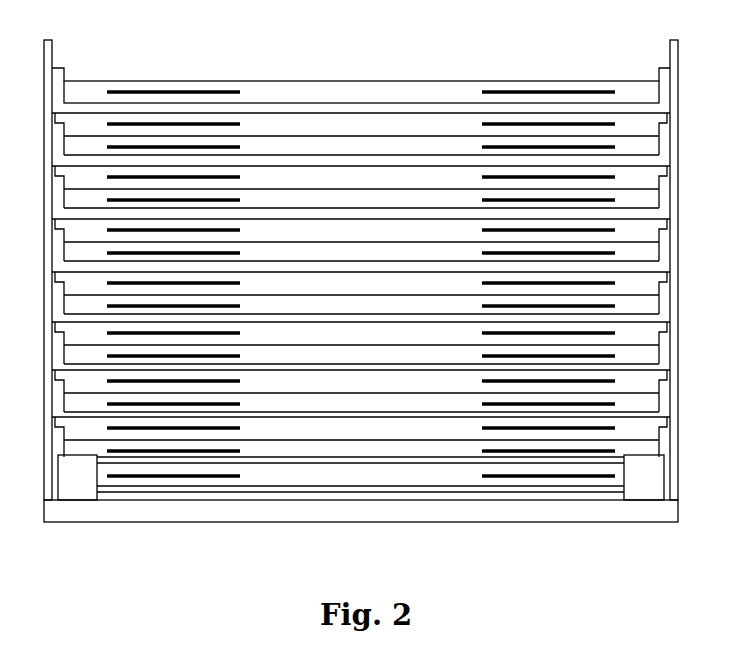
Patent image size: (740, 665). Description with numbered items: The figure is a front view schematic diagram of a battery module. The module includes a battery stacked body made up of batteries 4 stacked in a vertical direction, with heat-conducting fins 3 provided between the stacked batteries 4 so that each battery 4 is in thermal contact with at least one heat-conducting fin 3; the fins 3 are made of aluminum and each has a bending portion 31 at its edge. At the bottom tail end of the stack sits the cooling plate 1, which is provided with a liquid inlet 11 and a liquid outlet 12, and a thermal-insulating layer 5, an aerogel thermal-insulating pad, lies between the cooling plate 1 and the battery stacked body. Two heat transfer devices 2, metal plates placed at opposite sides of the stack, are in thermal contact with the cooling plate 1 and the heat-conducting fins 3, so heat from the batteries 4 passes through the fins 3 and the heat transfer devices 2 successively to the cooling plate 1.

The cooling plate 1 is at (397, 511).
The heat transfer device 2 is at (672, 38).
The heat-conducting fin 3 is at (278, 105).
The batteries 4 is at (386, 88).
The bending portion 31 is at (60, 72).
The thermal-insulating layer 5 is at (138, 488).
The liquid inlet 11 is at (80, 477).
The liquid outlet 12 is at (645, 480).